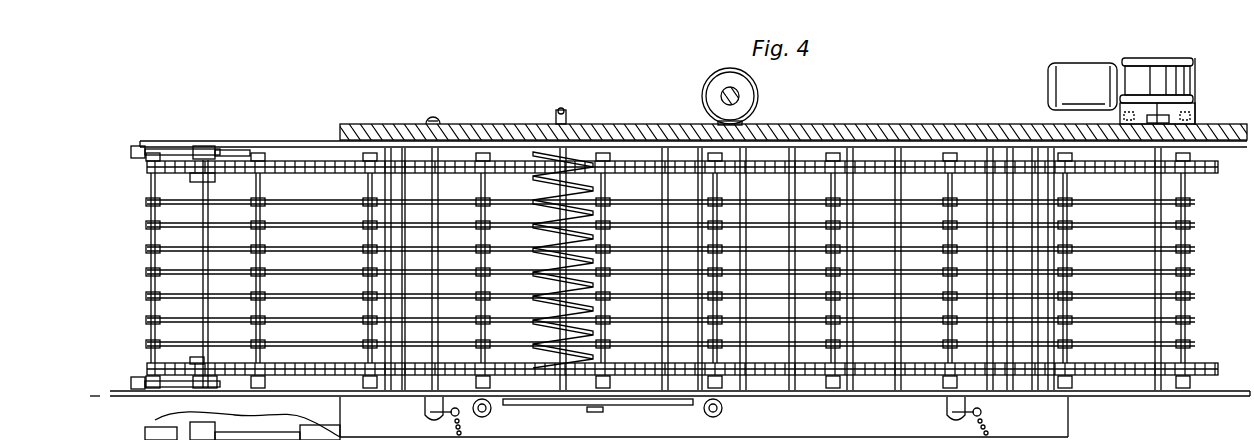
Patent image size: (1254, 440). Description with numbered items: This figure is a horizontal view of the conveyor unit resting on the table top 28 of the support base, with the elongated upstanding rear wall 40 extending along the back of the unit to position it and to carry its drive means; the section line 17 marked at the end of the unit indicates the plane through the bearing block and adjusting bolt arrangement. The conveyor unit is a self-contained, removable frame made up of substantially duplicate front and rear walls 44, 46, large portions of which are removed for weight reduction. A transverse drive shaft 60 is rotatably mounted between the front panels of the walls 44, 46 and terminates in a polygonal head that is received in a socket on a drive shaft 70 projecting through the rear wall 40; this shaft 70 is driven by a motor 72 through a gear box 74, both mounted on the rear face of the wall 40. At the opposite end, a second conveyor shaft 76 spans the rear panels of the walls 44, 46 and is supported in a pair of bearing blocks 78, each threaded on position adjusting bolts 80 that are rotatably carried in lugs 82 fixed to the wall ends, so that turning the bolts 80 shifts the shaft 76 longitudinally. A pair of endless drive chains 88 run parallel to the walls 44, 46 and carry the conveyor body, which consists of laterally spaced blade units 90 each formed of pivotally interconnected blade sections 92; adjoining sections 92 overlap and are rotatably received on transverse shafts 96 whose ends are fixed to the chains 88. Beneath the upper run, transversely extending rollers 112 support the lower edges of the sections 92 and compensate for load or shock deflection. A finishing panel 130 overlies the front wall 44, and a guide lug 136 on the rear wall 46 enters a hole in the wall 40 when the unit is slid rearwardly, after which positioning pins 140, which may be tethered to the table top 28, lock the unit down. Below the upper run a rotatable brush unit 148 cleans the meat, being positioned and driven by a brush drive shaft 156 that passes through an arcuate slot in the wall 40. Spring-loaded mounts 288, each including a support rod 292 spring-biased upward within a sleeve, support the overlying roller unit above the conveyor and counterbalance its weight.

The section line 17- 17 is at (110, 180).
The table top 28 is at (1045, 415).
The rear wall 40 is at (960, 128).
The front wall 44 is at (765, 396).
The rear wall 46 is at (592, 140).
The drive shaft 60 is at (1158, 258).
The drive shaft 70 is at (1160, 107).
The motor 72 is at (1068, 75).
The gear box 74 is at (1152, 66).
The conveyor shaft 76 is at (205, 302).
The bearing blocks 78 is at (203, 146).
The position adjusting bolts 80 is at (167, 149).
The lugs 82 is at (145, 145).
The drive chains 88 is at (916, 162).
The blade units 90 is at (1194, 286).
The blade sections 92 is at (1034, 318).
The shaft 96 is at (838, 281).
The rollers 112 is at (440, 185).
The finishing panel 130 is at (1205, 398).
The guide lug 136 is at (430, 118).
The positioning pins 140 is at (462, 418).
The brush unit 148 is at (530, 236).
The brush drive shaft 156 is at (556, 110).
The spring-loaded mounts 288 is at (722, 70).
The support rod 292 is at (720, 97).